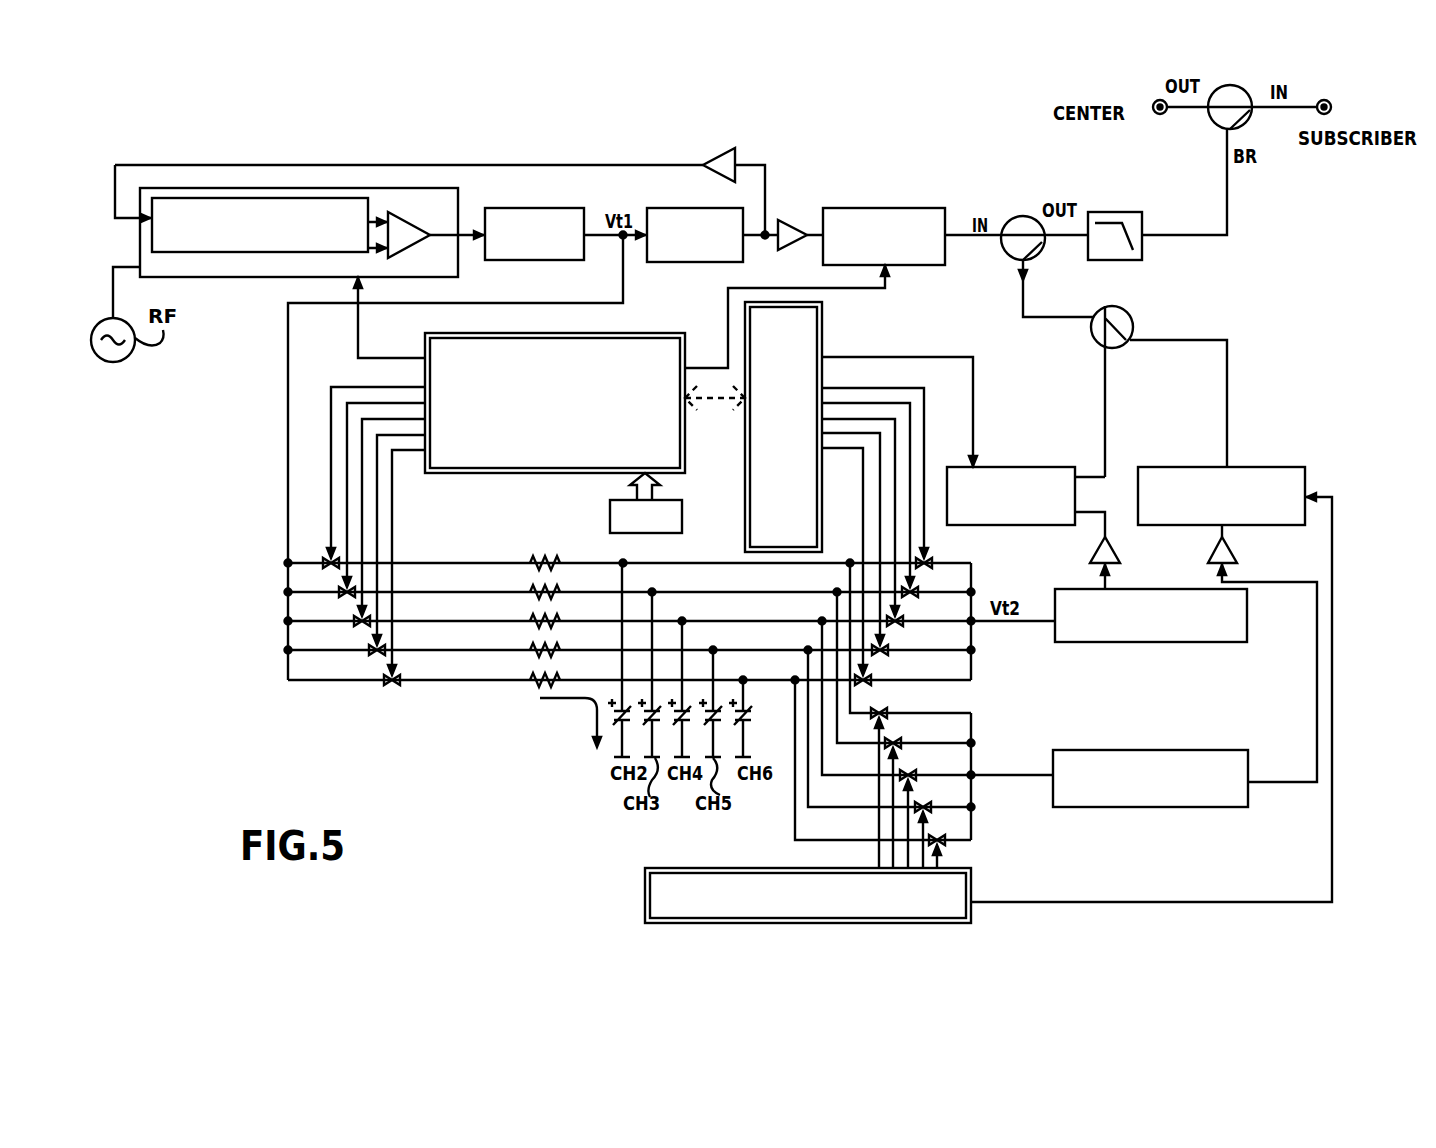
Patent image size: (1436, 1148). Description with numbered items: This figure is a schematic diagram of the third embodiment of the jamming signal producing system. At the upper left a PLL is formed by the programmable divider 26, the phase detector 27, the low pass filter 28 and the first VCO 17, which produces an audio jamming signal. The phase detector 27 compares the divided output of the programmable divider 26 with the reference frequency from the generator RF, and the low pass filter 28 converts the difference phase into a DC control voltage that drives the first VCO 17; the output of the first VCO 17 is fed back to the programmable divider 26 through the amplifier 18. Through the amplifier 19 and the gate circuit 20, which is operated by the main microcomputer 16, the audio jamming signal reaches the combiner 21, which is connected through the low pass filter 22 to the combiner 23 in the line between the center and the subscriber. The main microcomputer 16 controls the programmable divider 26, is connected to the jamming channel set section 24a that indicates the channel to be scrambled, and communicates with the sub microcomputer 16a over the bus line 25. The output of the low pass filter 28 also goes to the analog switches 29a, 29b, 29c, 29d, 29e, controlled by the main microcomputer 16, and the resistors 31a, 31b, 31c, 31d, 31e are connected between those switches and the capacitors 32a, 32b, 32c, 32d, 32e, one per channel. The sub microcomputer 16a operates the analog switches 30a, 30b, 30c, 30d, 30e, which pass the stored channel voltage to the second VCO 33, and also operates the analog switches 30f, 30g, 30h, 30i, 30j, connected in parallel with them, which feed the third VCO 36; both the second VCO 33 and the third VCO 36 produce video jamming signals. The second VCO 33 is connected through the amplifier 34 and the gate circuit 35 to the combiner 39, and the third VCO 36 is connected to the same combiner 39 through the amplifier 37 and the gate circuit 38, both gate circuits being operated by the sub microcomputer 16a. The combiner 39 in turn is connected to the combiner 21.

The main microcomputer 16 is at (518, 475).
The sub microcomputer 16a is at (822, 337).
The first VCO 17 is at (658, 201).
The amplifier 18 is at (722, 152).
The amplifier 19 is at (795, 226).
The gate circuit 20 is at (866, 206).
The combiner 21 is at (1021, 216).
The low pass filter 22 is at (1110, 212).
The combiner 23 is at (1218, 134).
The jamming channel set section 24a is at (610, 525).
The bus line 25 is at (718, 418).
The programmable divider 26 is at (238, 253).
The phase detector 27 is at (408, 211).
The low pass filter 28 is at (543, 201).
The analog switch 29a is at (325, 558).
The analog switch 29b is at (346, 599).
The analog switch 29c is at (361, 628).
The analog switch 29d is at (376, 657).
The analog switch 29e is at (390, 688).
The analog switch 30a is at (930, 568).
The analog switch 30b is at (912, 598).
The analog switch 30c is at (898, 628).
The analog switch 30d is at (883, 657).
The analog switch 30e is at (866, 688).
The analog switch 30f is at (882, 720).
The analog switch 30g is at (897, 750).
The analog switch 30h is at (912, 783).
The analog switch 30i is at (927, 815).
The analog switch 30j is at (942, 848).
The resistor 31a is at (538, 558).
The resistor 31b is at (545, 587).
The resistor 31c is at (545, 616).
The resistor 31d is at (545, 645).
The resistor 31e is at (538, 675).
The capacitor 32a is at (612, 714).
The capacitor 32b is at (648, 722).
The capacitor 32c is at (685, 710).
The capacitor 32d is at (716, 710).
The capacitor 32e is at (750, 717).
The second VCO 33 is at (1247, 622).
The amplifier 34 is at (1122, 548).
The gate circuit 35 is at (1015, 460).
The third VCO 36 is at (1233, 748).
The amplifier 37 is at (1240, 555).
The gate circuit 38 is at (1283, 466).
The combiner 39 is at (1133, 313).